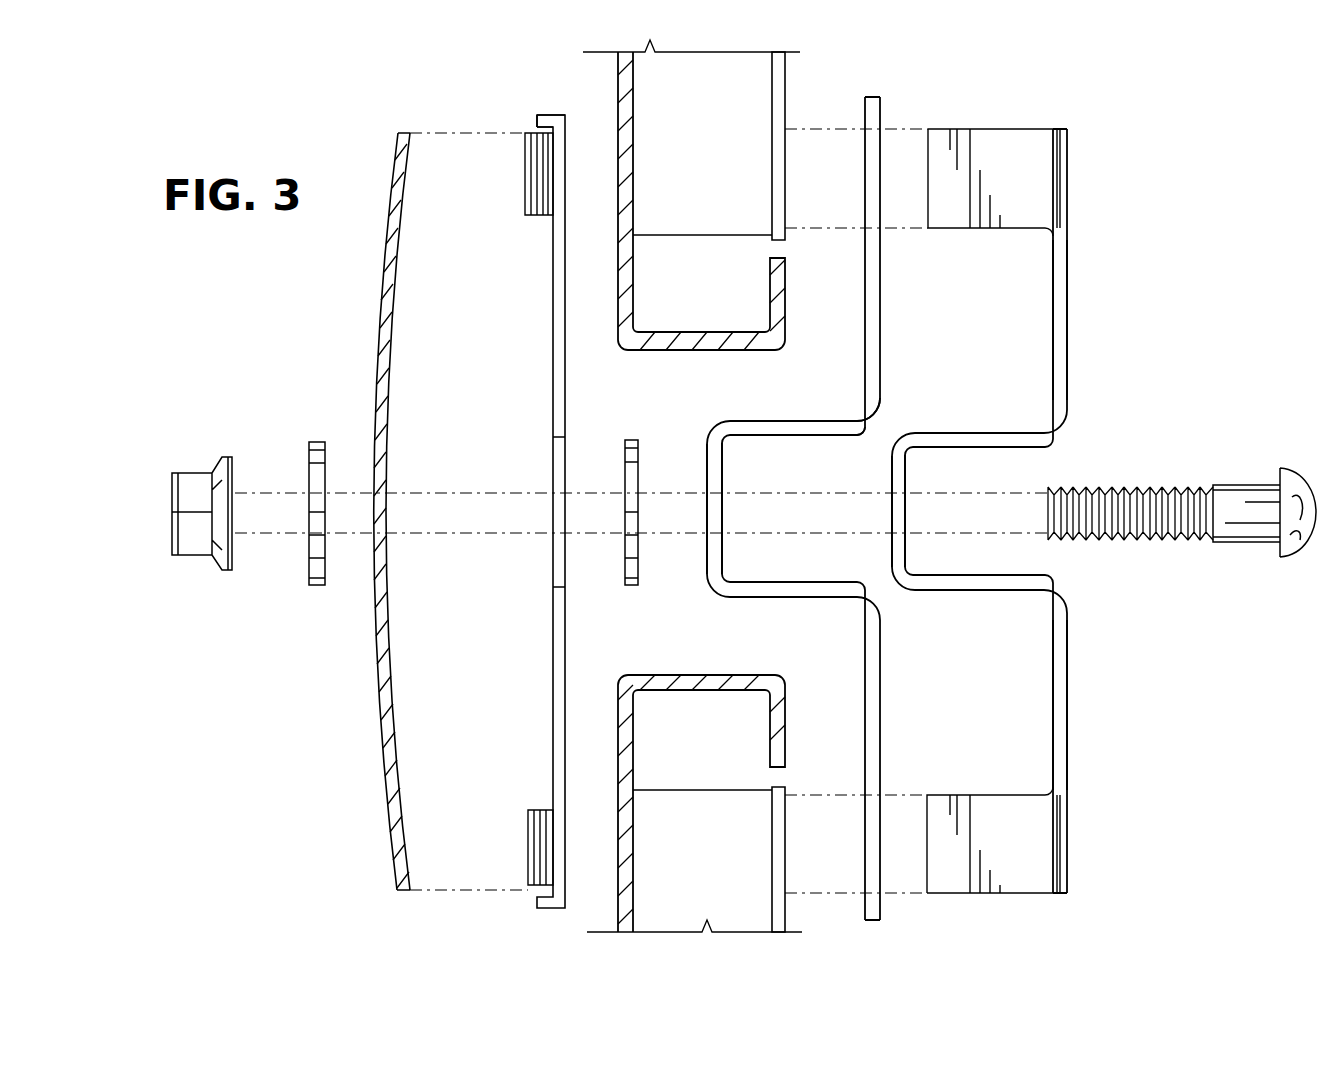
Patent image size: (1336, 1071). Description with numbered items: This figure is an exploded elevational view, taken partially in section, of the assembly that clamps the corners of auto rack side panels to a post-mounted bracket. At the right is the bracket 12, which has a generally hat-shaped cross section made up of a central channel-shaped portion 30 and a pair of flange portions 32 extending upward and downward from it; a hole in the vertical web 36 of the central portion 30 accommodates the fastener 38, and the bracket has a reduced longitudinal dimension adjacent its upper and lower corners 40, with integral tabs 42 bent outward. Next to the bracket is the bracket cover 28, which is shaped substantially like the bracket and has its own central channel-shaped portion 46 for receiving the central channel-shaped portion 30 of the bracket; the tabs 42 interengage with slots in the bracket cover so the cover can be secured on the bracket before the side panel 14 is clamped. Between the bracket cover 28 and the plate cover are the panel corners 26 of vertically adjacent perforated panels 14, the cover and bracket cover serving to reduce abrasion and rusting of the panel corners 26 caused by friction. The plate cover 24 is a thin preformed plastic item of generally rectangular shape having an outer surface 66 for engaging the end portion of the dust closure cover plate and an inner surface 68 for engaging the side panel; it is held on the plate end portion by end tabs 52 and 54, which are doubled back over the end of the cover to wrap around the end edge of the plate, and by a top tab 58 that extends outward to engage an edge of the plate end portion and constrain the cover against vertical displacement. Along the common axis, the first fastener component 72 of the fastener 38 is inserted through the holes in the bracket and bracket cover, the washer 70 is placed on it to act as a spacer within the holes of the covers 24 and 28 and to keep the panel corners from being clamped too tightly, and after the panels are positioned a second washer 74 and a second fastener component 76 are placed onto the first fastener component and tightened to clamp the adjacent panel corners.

The bracket 12 is at (1068, 355).
The panel 14 is at (795, 94).
The plate cover 24 is at (553, 365).
The panel corner 26 is at (618, 325).
The bracket cover 28 is at (882, 340).
The central channel-shaped portion 30 is at (985, 432).
The flange portion 32 is at (1068, 270).
The vertical web 36 is at (890, 470).
The fastener 38 is at (1262, 480).
The upper and lower corners 40 is at (1065, 128).
The integral tab 42 is at (1038, 162).
The central channel-shaped portion 46 is at (724, 560).
The end tab 52 is at (525, 175).
The end tab 54 is at (528, 848).
The top tab 58 is at (545, 113).
The outer surface 66 is at (553, 270).
The inner surface 68 is at (565, 640).
The washer 70 is at (645, 440).
The first fastener component 72 is at (1147, 540).
The second washer 74 is at (316, 590).
The second fastener component 76 is at (185, 455).